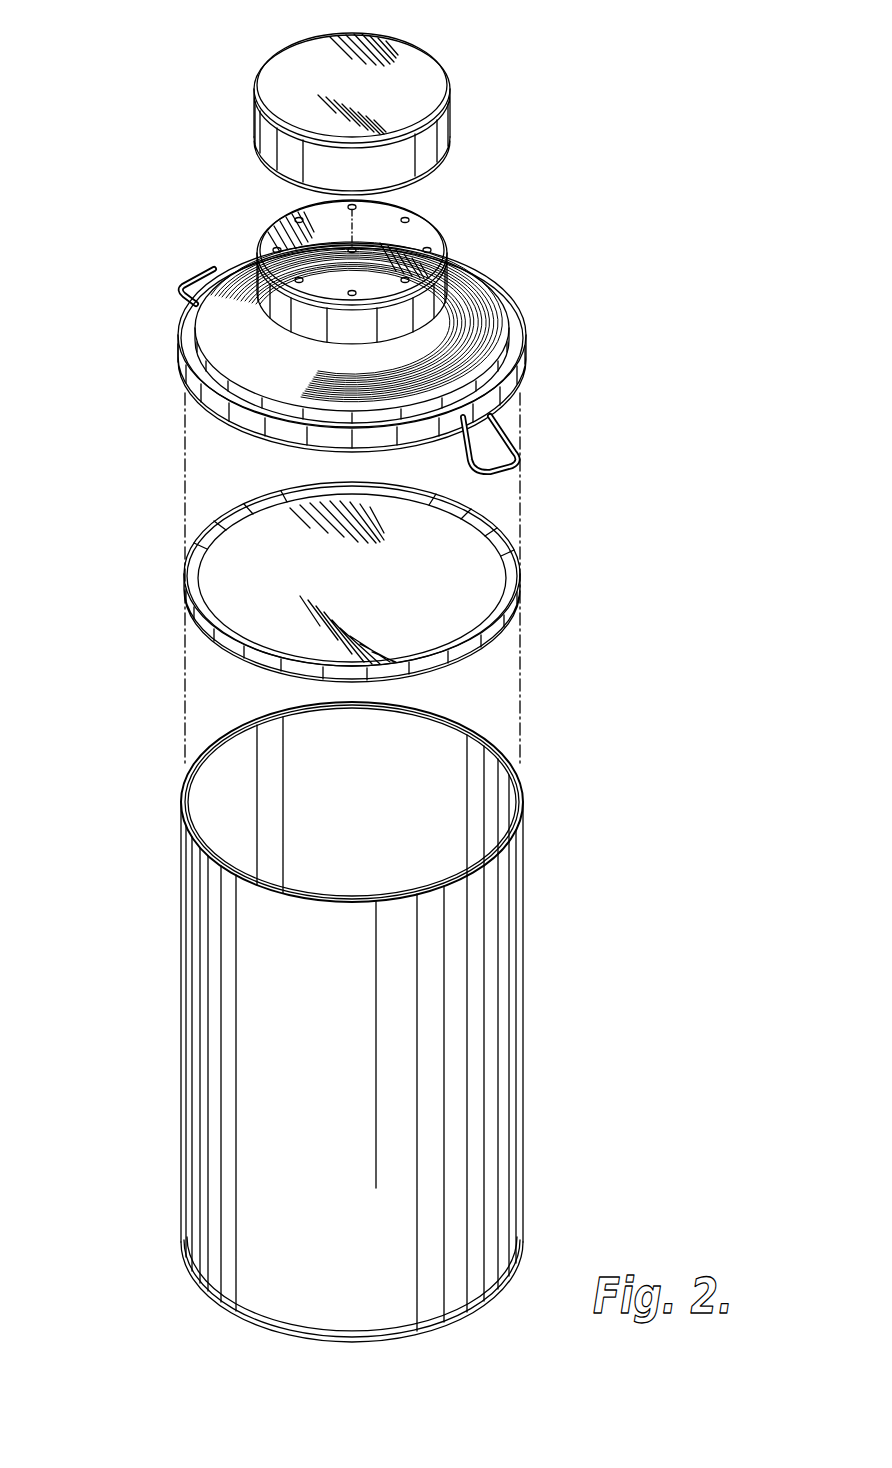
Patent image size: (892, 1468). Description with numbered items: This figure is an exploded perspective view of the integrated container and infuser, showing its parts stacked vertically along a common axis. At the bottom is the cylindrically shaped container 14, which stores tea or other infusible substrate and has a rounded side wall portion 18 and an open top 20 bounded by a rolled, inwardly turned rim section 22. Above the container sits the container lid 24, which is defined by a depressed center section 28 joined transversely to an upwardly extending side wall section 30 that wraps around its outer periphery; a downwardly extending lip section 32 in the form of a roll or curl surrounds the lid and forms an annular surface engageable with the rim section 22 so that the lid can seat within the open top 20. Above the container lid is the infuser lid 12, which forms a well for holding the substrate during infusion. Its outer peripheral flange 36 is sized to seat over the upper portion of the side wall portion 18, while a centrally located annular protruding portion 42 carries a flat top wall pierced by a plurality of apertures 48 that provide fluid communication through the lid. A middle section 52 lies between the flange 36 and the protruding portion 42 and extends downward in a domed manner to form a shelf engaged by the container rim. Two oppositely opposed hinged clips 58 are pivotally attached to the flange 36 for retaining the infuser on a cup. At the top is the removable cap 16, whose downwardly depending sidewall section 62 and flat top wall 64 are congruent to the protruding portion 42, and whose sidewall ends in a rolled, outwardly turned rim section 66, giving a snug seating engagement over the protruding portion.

The infuser lid 12 is at (175, 352).
The container 14 is at (168, 1039).
The cap 16 is at (248, 98).
The side wall portion 18 is at (525, 1040).
The open top 20 is at (430, 751).
The rim section 22 is at (525, 800).
The container lid 24 is at (170, 570).
The depressed center section 28 is at (487, 562).
The side wall section 30 is at (315, 496).
The lip section 32 is at (262, 657).
The outer peripheral flange 36 is at (527, 352).
The annular protruding portion 42 is at (273, 232).
The apertures 48 is at (430, 248).
The middle section 52 is at (488, 290).
The hinged clips 58 is at (520, 457).
The sidewall section 62 is at (428, 130).
The top wall 64 is at (433, 62).
The rim section 66 is at (432, 172).